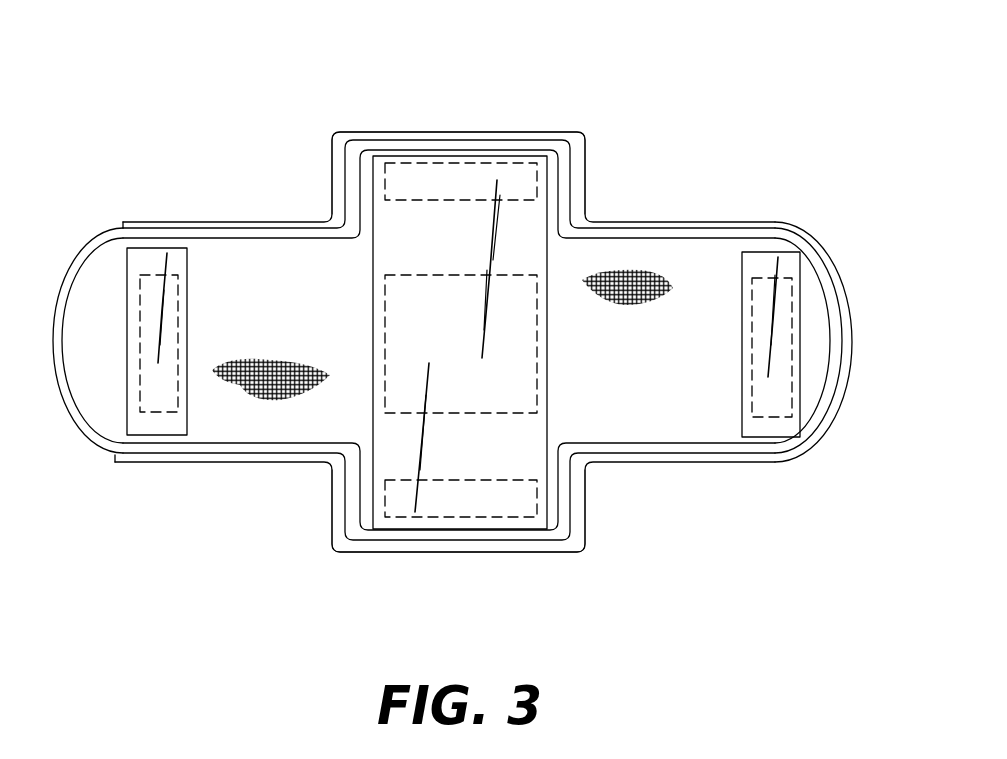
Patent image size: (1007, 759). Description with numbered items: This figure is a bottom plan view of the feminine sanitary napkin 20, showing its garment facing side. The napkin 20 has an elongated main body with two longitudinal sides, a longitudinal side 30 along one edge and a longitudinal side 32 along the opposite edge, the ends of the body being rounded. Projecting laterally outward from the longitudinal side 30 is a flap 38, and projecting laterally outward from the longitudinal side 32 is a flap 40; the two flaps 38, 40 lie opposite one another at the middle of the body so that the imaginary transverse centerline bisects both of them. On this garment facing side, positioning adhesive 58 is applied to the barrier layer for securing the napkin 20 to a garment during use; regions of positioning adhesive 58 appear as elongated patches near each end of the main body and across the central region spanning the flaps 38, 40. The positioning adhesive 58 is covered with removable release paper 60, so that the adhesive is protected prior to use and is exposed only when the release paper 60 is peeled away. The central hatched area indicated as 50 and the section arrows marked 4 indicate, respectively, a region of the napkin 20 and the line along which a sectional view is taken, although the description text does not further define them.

The sanitary napkin 20 is at (453, 304).
The longitudinal side 30 is at (690, 466).
The longitudinal side 32 is at (643, 226).
The flap 38 is at (314, 522).
The flap 40 is at (314, 164).
The absorbent core 50 is at (277, 335).
The positioning adhesive 58 is at (412, 176).
The removable release paper 60 is at (470, 182).
The section line 4- 4 is at (42, 342).